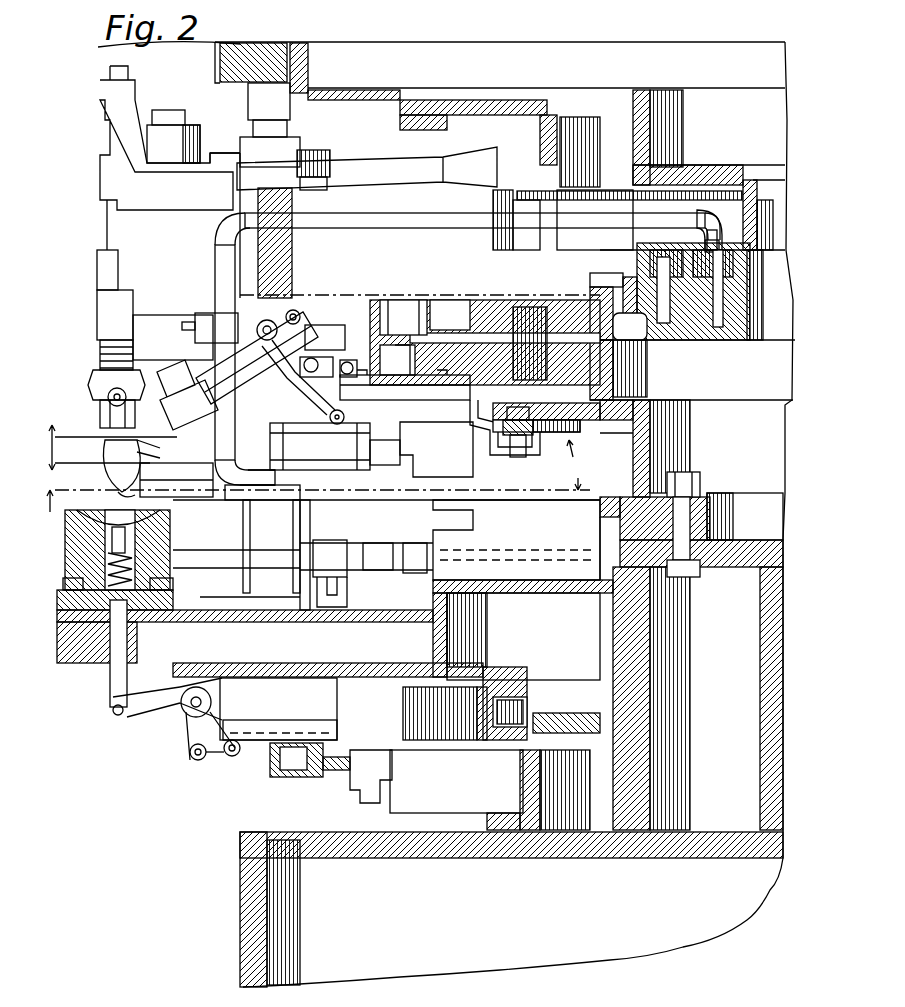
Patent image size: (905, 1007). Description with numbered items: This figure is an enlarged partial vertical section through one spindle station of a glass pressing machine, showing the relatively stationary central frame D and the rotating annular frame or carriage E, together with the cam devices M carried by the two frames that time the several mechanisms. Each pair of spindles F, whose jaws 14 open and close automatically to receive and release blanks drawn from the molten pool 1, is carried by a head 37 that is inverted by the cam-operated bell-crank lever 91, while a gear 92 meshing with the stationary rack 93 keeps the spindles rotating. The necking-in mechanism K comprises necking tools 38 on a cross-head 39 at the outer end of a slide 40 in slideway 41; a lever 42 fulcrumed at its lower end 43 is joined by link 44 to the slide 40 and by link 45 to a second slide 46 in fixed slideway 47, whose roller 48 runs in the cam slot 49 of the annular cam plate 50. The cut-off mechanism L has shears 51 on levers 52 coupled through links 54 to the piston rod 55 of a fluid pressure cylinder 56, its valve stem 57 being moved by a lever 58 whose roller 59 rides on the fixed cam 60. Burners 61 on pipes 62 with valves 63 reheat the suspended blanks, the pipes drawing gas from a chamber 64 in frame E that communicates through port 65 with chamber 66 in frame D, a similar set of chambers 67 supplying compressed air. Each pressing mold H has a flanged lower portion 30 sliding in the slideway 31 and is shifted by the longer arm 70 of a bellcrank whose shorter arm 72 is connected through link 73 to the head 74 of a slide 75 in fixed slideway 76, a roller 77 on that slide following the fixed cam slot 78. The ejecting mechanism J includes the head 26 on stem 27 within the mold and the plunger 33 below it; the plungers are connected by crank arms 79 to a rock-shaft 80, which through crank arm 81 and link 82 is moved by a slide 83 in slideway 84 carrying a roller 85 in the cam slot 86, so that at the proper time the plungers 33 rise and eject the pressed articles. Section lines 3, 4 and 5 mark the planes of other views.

The molten pool 1 is at (330, 417).
The section line 3- 3 is at (104, 447).
The section line 4- 4 is at (90, 464).
The section line 5- 5 is at (307, 495).
The spindle jaws 14 is at (95, 418).
The head 26 is at (77, 535).
The stem 27 is at (65, 582).
The flanged lower portion 30 is at (62, 598).
The slideway 31 is at (60, 614).
The plunger 33 is at (112, 675).
The head 37 is at (128, 282).
The necking tools 38 is at (100, 400).
The cross-head 39 is at (105, 384).
The slide 40 is at (183, 390).
The slideway 41 is at (248, 378).
The lever 42 is at (320, 353).
The lower end 43 is at (310, 408).
The link 44 is at (324, 330).
The link 45 is at (352, 305).
The second slide 46 is at (381, 359).
The fixed slideway 47 is at (398, 397).
The roller 48 is at (408, 355).
The cam slot 49 is at (388, 320).
The annular cam plate 50 is at (440, 337).
The shears 51 is at (140, 458).
The levers 52 is at (132, 478).
The links 54 is at (285, 426).
The piston rod 55 is at (272, 478).
The fluid pressure cylinder 56 is at (280, 490).
The valve stem 57 is at (420, 448).
The lever 58 is at (533, 447).
The roller 59 is at (558, 405).
The fixed cam 60 is at (505, 420).
The burners 61 is at (165, 483).
The pipes 62 is at (228, 262).
The valves 63 is at (218, 318).
The chamber 64 is at (735, 240).
The port 65 is at (720, 282).
The chamber 66 is at (745, 340).
The communicating chambers 67 is at (668, 340).
The longer arm 70 is at (220, 565).
The shorter arm 72 is at (353, 548).
The link 73 is at (385, 550).
The head 74 is at (402, 568).
The slide 75 is at (498, 562).
The fixed slideway 76 is at (508, 553).
The roller 77 is at (608, 505).
The fixed cam slot 78 is at (565, 548).
The crank arms 79 is at (133, 717).
The rock-shaft 80 is at (192, 705).
The crank arm 81 is at (200, 728).
The link 82 is at (210, 760).
The slide 83 is at (263, 740).
The slideway 84 is at (337, 727).
The roller 85 is at (280, 763).
The cam slot 86 is at (293, 775).
The bell-crank lever 91 is at (362, 178).
The gear 92 is at (493, 243).
The stationary rack 93 is at (645, 200).
The central fixed frame portion D is at (258, 853).
The annular frame structure E is at (347, 235).
The spindles F is at (87, 345).
The pressing molds H is at (63, 536).
The ejecting mechanism J is at (179, 728).
The necking-in mechanism K is at (186, 367).
The cut-off mechanism L is at (128, 443).
The cam devices M is at (574, 456).